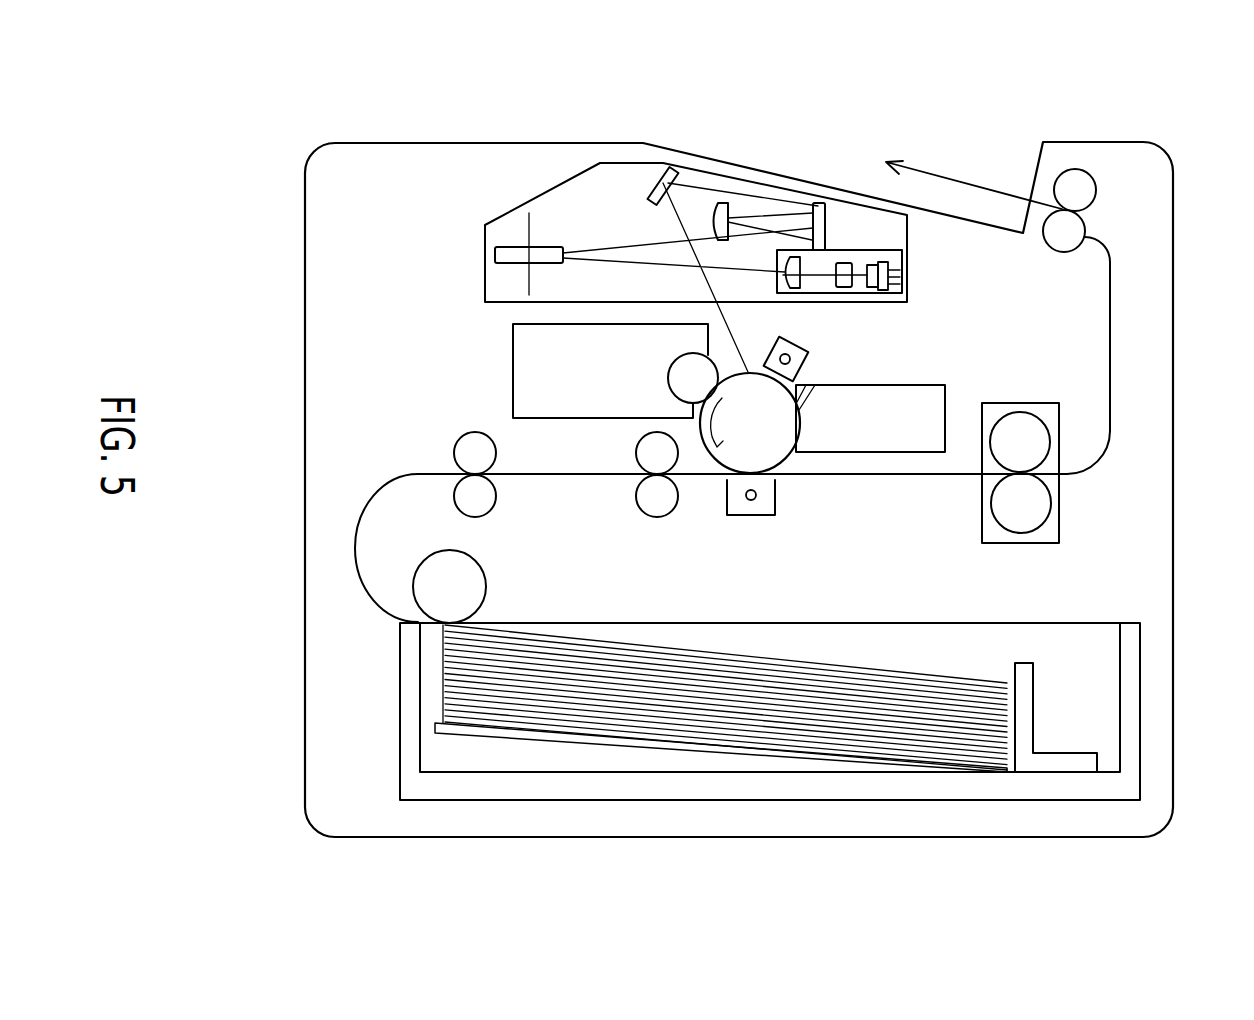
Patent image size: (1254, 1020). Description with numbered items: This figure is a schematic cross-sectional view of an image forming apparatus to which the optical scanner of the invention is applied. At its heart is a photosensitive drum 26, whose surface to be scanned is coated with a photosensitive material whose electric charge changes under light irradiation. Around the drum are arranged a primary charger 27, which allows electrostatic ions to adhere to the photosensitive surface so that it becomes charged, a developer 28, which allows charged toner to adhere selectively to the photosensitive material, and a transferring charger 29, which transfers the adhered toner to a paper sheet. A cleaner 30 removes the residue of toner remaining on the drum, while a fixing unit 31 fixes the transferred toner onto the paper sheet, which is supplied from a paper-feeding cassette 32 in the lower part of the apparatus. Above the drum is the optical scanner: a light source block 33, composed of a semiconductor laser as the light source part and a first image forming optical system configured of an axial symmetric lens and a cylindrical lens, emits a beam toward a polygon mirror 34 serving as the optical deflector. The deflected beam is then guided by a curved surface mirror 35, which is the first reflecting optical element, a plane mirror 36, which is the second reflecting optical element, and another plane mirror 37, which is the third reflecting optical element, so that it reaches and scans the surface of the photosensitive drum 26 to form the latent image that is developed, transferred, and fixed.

The photosensitive drum 26 is at (773, 453).
The primary charger 27 is at (807, 350).
The developer 28 is at (527, 375).
The transferring charger 29 is at (727, 516).
The cleaner 30 is at (937, 396).
The fixing unit 31 is at (1059, 512).
The paper-feeding cassette 32 is at (945, 788).
The light source block 33 is at (858, 250).
The polygon mirror 34 is at (510, 248).
The curved surface mirror 35 is at (722, 204).
The plane mirror 36 is at (818, 203).
The plane mirror 37 is at (668, 176).